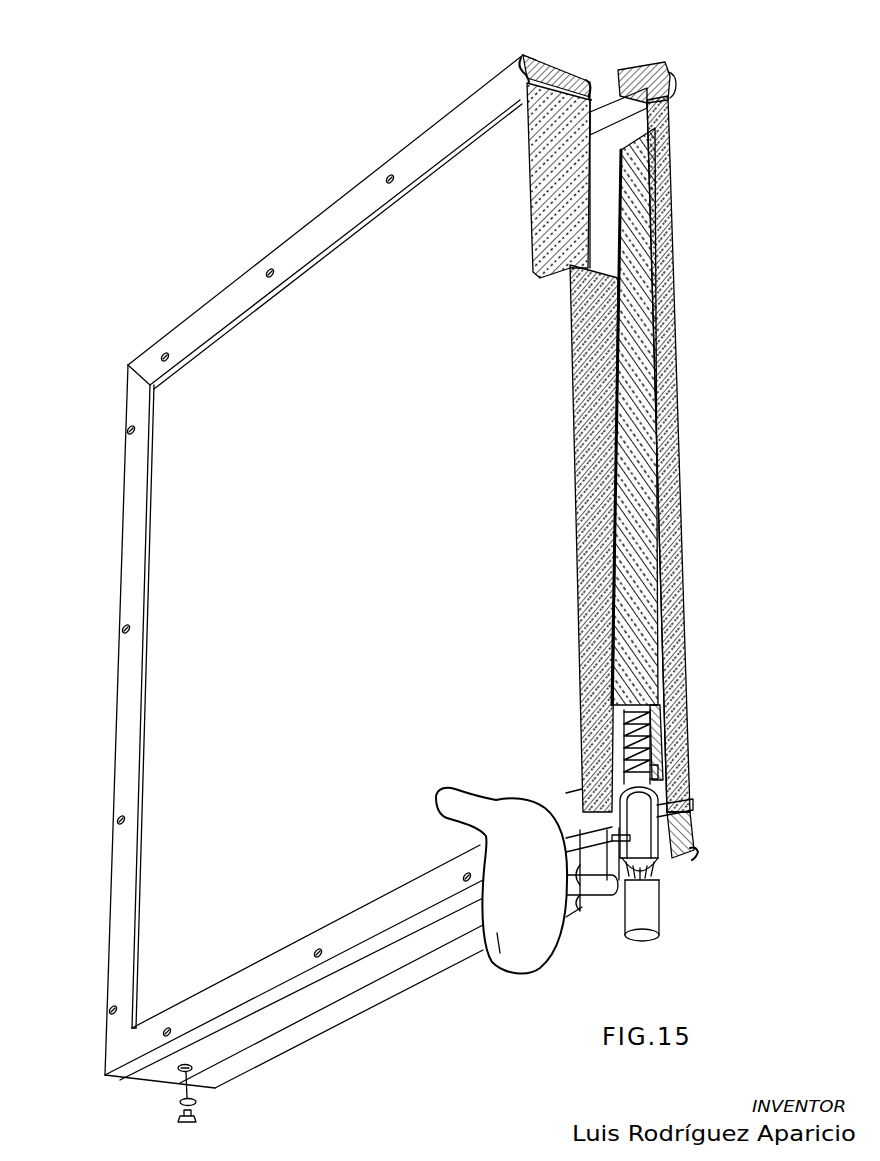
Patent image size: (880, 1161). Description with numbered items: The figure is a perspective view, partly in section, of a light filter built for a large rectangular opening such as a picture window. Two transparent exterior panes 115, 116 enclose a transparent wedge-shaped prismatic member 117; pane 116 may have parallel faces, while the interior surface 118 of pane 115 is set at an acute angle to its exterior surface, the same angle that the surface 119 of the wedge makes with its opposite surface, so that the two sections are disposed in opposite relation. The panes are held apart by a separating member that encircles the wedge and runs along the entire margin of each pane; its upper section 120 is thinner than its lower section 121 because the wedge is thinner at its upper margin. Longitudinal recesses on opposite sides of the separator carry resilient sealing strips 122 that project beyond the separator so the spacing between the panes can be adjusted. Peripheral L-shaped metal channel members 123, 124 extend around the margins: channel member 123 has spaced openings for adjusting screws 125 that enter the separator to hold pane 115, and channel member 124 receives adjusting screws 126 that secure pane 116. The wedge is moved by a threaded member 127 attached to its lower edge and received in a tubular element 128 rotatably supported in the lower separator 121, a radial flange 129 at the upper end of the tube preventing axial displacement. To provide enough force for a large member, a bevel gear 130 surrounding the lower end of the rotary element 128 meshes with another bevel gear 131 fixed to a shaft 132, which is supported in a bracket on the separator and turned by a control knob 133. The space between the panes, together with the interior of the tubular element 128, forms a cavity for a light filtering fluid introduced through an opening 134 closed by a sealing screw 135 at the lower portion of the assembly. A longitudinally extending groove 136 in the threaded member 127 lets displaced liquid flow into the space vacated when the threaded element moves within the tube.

The transparent exterior pane 115 is at (314, 507).
The transparent exterior pane 116 is at (669, 348).
The prismatic member 117 is at (640, 406).
The interior surface 118 is at (620, 346).
The wedge surface 119 is at (622, 295).
The upper section 120 is at (603, 80).
The lower section 121 is at (343, 990).
The resilient sealing strips 122 is at (592, 78).
The L-shaped channel member 123 is at (285, 248).
The L-shaped channel member 124 is at (648, 72).
The adjusting screws 125 is at (163, 346).
The adjusting screws 126 is at (668, 86).
The threaded member 127 is at (645, 735).
The tubular element 128 is at (686, 802).
The radial flange 129 is at (645, 790).
The bevel gear 130 is at (672, 878).
The bevel gear 131 is at (626, 925).
The shaft 132 is at (598, 900).
The control knob 133 is at (488, 958).
The opening 134 is at (183, 1080).
The sealing screw 135 is at (184, 1124).
The longitudinally extending groove 136 is at (656, 770).